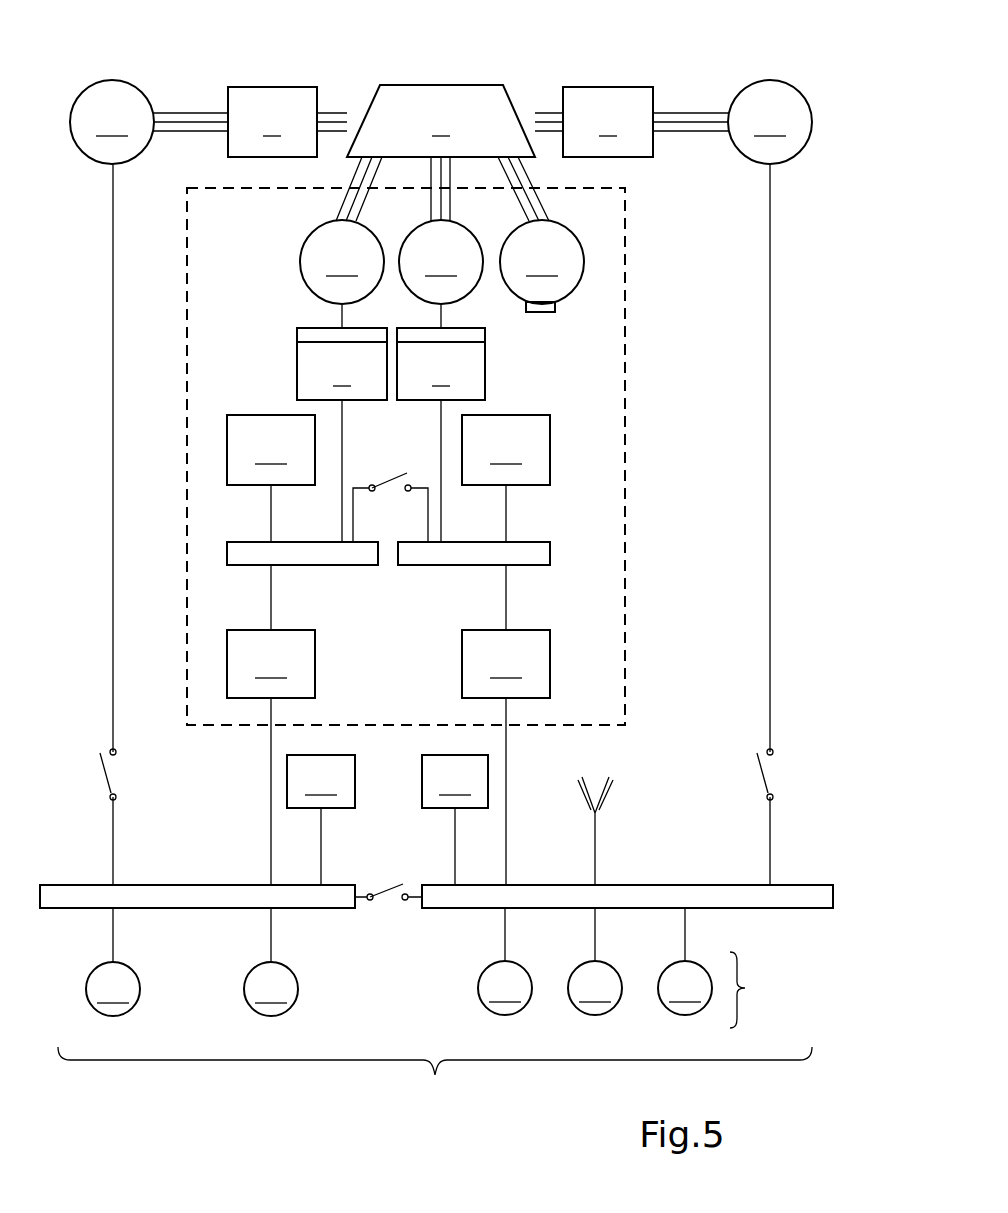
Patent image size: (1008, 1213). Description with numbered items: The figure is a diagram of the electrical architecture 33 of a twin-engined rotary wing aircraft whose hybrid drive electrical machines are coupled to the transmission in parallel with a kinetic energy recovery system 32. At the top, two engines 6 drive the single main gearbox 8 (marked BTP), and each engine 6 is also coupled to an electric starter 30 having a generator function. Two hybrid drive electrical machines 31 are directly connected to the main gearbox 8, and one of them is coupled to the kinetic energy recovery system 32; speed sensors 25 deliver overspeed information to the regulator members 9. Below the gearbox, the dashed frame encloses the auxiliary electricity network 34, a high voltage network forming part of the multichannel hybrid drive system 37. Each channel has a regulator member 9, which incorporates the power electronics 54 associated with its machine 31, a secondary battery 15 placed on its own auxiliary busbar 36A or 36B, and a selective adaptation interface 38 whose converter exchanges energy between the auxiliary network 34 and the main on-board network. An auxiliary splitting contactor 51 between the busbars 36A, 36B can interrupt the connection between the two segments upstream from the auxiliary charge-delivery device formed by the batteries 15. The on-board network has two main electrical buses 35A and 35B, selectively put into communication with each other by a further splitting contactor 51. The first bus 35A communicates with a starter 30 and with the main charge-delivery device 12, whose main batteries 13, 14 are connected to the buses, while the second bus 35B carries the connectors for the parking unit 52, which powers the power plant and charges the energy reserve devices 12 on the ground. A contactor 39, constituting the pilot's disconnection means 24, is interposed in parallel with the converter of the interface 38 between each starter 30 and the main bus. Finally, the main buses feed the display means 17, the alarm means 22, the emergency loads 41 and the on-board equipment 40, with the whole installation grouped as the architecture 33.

The engine 6 is at (440, 122).
The main gearbox 8 is at (441, 121).
The regulator member 9 is at (391, 435).
The device for delivering electric charge 12 is at (346, 812).
The main battery 13 is at (321, 820).
The main battery 14 is at (455, 820).
The secondary battery 15 is at (388, 478).
The display means 17 is at (309, 962).
The alarm means 22 is at (478, 962).
The disconnection means 24 is at (765, 774).
The speed sensor 25 is at (540, 313).
The electric starter 30 is at (126, 70).
The hybrid drive electrical machine 31 is at (302, 291).
The kinetic energy recovery system 32 is at (542, 262).
The electrical architecture 33 is at (435, 1078).
The auxiliary electricity network 34 is at (625, 698).
The main electrical bus 35A is at (183, 885).
The main electrical bus 35B is at (678, 885).
The auxiliary busbar 36A is at (300, 566).
The auxiliary busbar 36B is at (448, 566).
The hybrid drive system 37 is at (458, 463).
The selective adaptation interface 38 is at (388, 725).
The contactor 39 is at (132, 772).
The on-board equipment 40 is at (757, 990).
The emergency loads 41 is at (595, 961).
The splitting contactor 51 is at (385, 469).
The parking unit 52 is at (620, 803).
The power electronics 54 is at (297, 335).